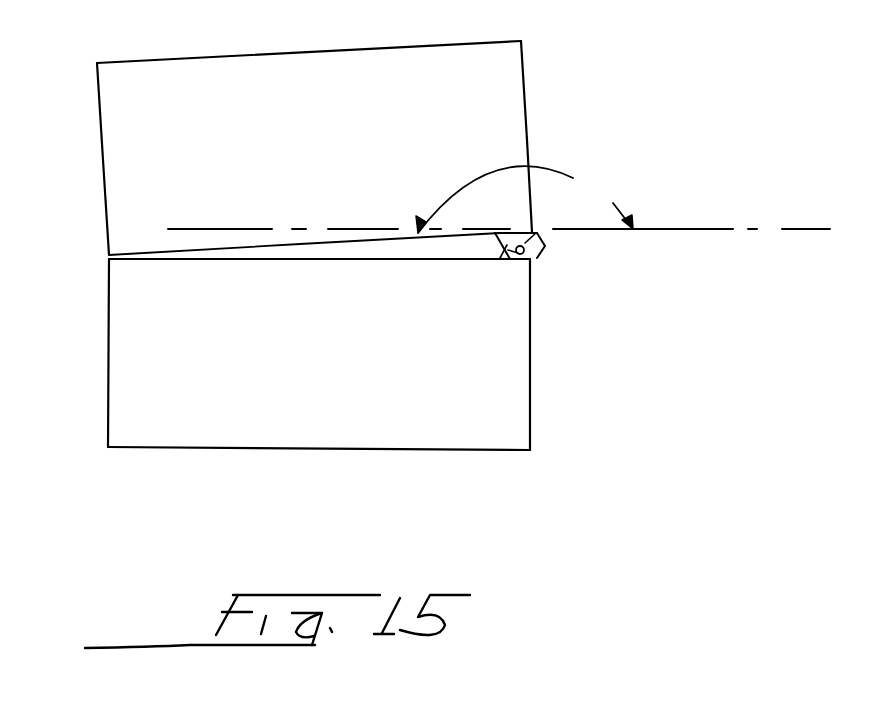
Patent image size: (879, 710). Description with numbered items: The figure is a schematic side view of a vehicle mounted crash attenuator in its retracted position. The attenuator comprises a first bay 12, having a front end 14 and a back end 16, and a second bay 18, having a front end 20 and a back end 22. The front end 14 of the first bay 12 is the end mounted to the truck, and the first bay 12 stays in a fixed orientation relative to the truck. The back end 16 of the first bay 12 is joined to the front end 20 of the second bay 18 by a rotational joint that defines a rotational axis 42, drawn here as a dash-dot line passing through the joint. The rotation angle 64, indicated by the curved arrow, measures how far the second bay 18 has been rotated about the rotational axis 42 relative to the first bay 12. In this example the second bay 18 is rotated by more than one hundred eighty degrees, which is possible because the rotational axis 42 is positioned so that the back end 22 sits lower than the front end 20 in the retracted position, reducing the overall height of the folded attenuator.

The first bay 12 is at (323, 354).
The front end 14 is at (108, 390).
The back end 16 is at (532, 372).
The second bay 18 is at (311, 148).
The front end 20 is at (534, 141).
The back end 22 is at (98, 186).
The rotational axis 42 is at (540, 256).
The rotation angle 64 is at (499, 199).